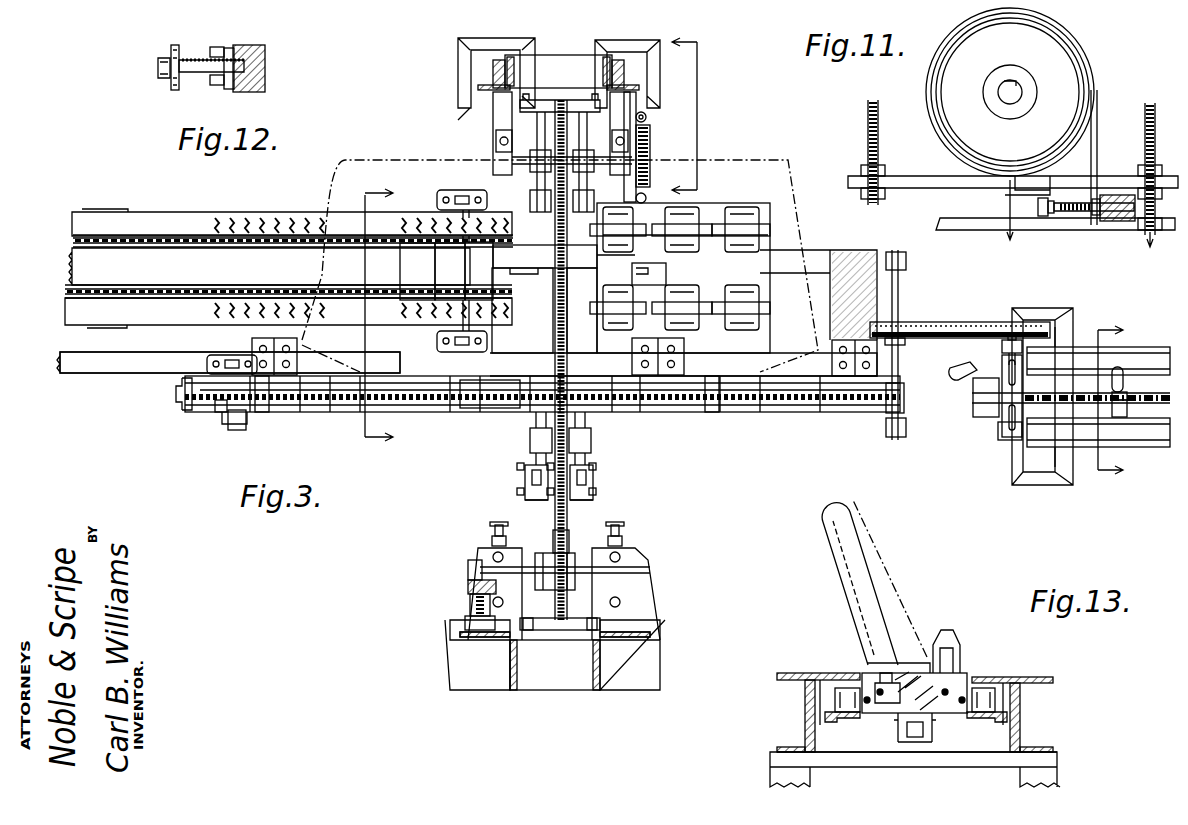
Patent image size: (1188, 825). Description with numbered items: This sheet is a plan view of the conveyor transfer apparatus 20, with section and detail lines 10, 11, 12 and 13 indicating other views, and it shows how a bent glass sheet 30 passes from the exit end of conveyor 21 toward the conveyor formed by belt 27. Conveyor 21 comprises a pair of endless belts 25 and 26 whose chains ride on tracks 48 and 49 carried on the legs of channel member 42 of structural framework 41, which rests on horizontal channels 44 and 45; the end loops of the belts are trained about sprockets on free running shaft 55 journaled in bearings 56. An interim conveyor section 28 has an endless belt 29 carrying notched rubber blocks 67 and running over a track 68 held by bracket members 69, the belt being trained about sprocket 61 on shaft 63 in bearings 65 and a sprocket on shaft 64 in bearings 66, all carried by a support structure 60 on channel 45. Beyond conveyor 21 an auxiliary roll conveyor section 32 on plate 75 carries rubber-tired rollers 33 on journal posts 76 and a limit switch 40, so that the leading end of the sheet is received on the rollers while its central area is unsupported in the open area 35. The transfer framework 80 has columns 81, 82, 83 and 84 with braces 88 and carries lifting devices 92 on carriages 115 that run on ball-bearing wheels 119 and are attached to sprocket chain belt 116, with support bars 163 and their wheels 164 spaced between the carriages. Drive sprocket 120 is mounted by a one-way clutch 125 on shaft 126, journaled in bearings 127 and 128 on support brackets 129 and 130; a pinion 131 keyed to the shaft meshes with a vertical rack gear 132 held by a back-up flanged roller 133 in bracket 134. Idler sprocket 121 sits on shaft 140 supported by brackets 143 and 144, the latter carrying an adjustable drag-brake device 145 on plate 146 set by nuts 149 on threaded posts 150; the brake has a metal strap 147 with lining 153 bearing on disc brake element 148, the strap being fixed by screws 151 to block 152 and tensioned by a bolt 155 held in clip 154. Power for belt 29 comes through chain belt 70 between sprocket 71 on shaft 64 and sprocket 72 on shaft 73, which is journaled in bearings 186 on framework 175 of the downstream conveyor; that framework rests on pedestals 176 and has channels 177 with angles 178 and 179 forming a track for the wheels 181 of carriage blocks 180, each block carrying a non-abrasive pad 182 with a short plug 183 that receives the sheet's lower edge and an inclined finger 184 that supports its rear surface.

In FIG. 3, the section line 10 is at (365, 314).
In FIG. 3, the section line 11 is at (698, 112).
In FIG. 11, the section line 12 is at (1078, 218).
In FIG. 3, the section line 13 is at (1109, 399).
In FIG. 3, the conveyor transfer apparatus 20 is at (453, 56).
In FIG. 3, the conveyor 21 is at (184, 209).
In FIG. 3, the endless conveyor belt 25 is at (242, 222).
In FIG. 3, the endless conveyor belt 26 is at (133, 312).
In FIG. 3, the conveyor belt 27 is at (1103, 407).
In FIG. 13, the conveyor belt 27 is at (921, 722).
In FIG. 3, the interim conveyor section 28 is at (420, 419).
In FIG. 3, the endless belt 29 is at (280, 400).
In FIG. 3, the bent glass sheet 30 is at (400, 160).
In FIG. 3, the auxiliary roll conveyor section 32 is at (721, 219).
In FIG. 3, the rollers 33 is at (700, 242).
In FIG. 3, the open operable area 35 is at (549, 288).
In FIG. 3, the limit switch 40 is at (666, 275).
In FIG. 3, the structural framework 41 is at (93, 372).
In FIG. 3, the channel member 42 is at (75, 271).
In FIG. 3, the channel member 44 is at (515, 260).
In FIG. 3, the channel member 45 is at (143, 366).
In FIG. 3, the track 48 is at (290, 218).
In FIG. 3, the track 49 is at (182, 308).
In FIG. 3, the free running shaft 55 is at (465, 272).
In FIG. 3, the bearings 56 is at (460, 196).
In FIG. 3, the support structure 60 is at (649, 418).
In FIG. 3, the sprocket 61 is at (222, 406).
In FIG. 3, the shaft 63 is at (228, 420).
In FIG. 3, the shaft 64 is at (900, 370).
In FIG. 3, the bearings 65 is at (238, 430).
In FIG. 3, the bearings 66 is at (908, 264).
In FIG. 3, the notched blocks 67 is at (190, 400).
In FIG. 3, the track 68 is at (483, 413).
In FIG. 3, the bracket members 69 is at (652, 357).
In FIG. 3, the chain belt 70 is at (950, 323).
In FIG. 3, the sprocket 71 is at (905, 340).
In FIG. 3, the sprocket 72 is at (1004, 345).
In FIG. 3, the shaft 73 is at (1008, 358).
In FIG. 3, the horizontally disposed plate 75 is at (762, 288).
In FIG. 3, the journal posts 76 is at (695, 332).
In FIG. 3, the framework 80 is at (492, 81).
In FIG. 3, the column 81 is at (510, 660).
In FIG. 3, the column 82 is at (602, 660).
In FIG. 3, the column 83 is at (478, 88).
In FIG. 3, the column 84 is at (640, 86).
In FIG. 3, the braces 88 is at (557, 66).
In FIG. 3, the lifting devices 92 is at (533, 440).
In FIG. 3, the carriage 115 is at (561, 140).
In FIG. 3, the continuous sprocket chain belt 116 is at (556, 338).
In FIG. 3, the ball-bearing wheels 119 is at (595, 490).
In FIG. 3, the sprocket 120 is at (562, 548).
In FIG. 3, the idler sprocket 121 is at (548, 115).
In FIG. 3, the one-way clutch 125 is at (538, 565).
In FIG. 3, the shaft 126 is at (596, 570).
In FIG. 3, the bearing 127 is at (497, 547).
In FIG. 3, the bearing 128 is at (622, 560).
In FIG. 3, the support bracket 129 is at (480, 555).
In FIG. 3, the support bracket 130 is at (640, 583).
In FIG. 3, the pinion 131 is at (475, 575).
In FIG. 3, the rack gear 132 is at (478, 590).
In FIG. 3, the back-up flanged roller 133 is at (480, 605).
In FIG. 3, the bracket 134 is at (478, 626).
In FIG. 11, the shaft 140 is at (1010, 100).
In FIG. 3, the shaft 140 is at (526, 172).
In FIG. 3, the bracket 143 is at (495, 120).
In FIG. 11, the bracket 144 is at (945, 228).
In FIG. 3, the bracket 144 is at (648, 117).
In FIG. 11, the drag-brake device 145 is at (1101, 41).
In FIG. 3, the drag-brake device 145 is at (650, 156).
In FIG. 11, the plate 146 is at (905, 181).
In FIG. 3, the plate 146 is at (652, 128).
In FIG. 12, the metal strap 147 is at (218, 47).
In FIG. 11, the metal strap 147 is at (1090, 60).
In FIG. 11, the disc-type brake element 148 is at (1055, 80).
In FIG. 11, the nuts 149 is at (868, 190).
In FIG. 11, the threaded posts 150 is at (868, 121).
In FIG. 12, the screws 151 is at (212, 48).
In FIG. 11, the screws 151 is at (1092, 213).
In FIG. 12, the block 152 is at (262, 56).
In FIG. 11, the block 152 is at (1118, 222).
In FIG. 11, the brake lining material 153 is at (1097, 92).
In FIG. 12, the clip 154 is at (174, 44).
In FIG. 11, the clip 154 is at (1035, 194).
In FIG. 12, the bolt 155 is at (160, 68).
In FIG. 11, the bolt 155 is at (1060, 214).
In FIG. 3, the support bars 163 is at (590, 630).
In FIG. 3, the ball-bearing wheels 164 is at (528, 630).
In FIG. 3, the framework 175 is at (1130, 347).
In FIG. 13, the framework 175 is at (1068, 751).
In FIG. 3, the pedestals 176 is at (1048, 338).
In FIG. 13, the pedestals 176 is at (785, 776).
In FIG. 3, the channels 177 is at (1132, 360).
In FIG. 13, the channels 177 is at (805, 698).
In FIG. 13, the angle 178 is at (850, 720).
In FIG. 13, the angle 179 is at (835, 673).
In FIG. 3, the carriage blocks 180 is at (990, 405).
In FIG. 13, the carriage blocks 180 is at (903, 718).
In FIG. 13, the ball-bearing wheels 181 is at (838, 702).
In FIG. 13, the non-abrasive pad 182 is at (908, 673).
In FIG. 3, the plug 183 is at (1102, 405).
In FIG. 13, the plug 183 is at (957, 645).
In FIG. 3, the finger 184 is at (1124, 373).
In FIG. 13, the finger 184 is at (855, 577).
In FIG. 3, the bearings 186 is at (1000, 437).